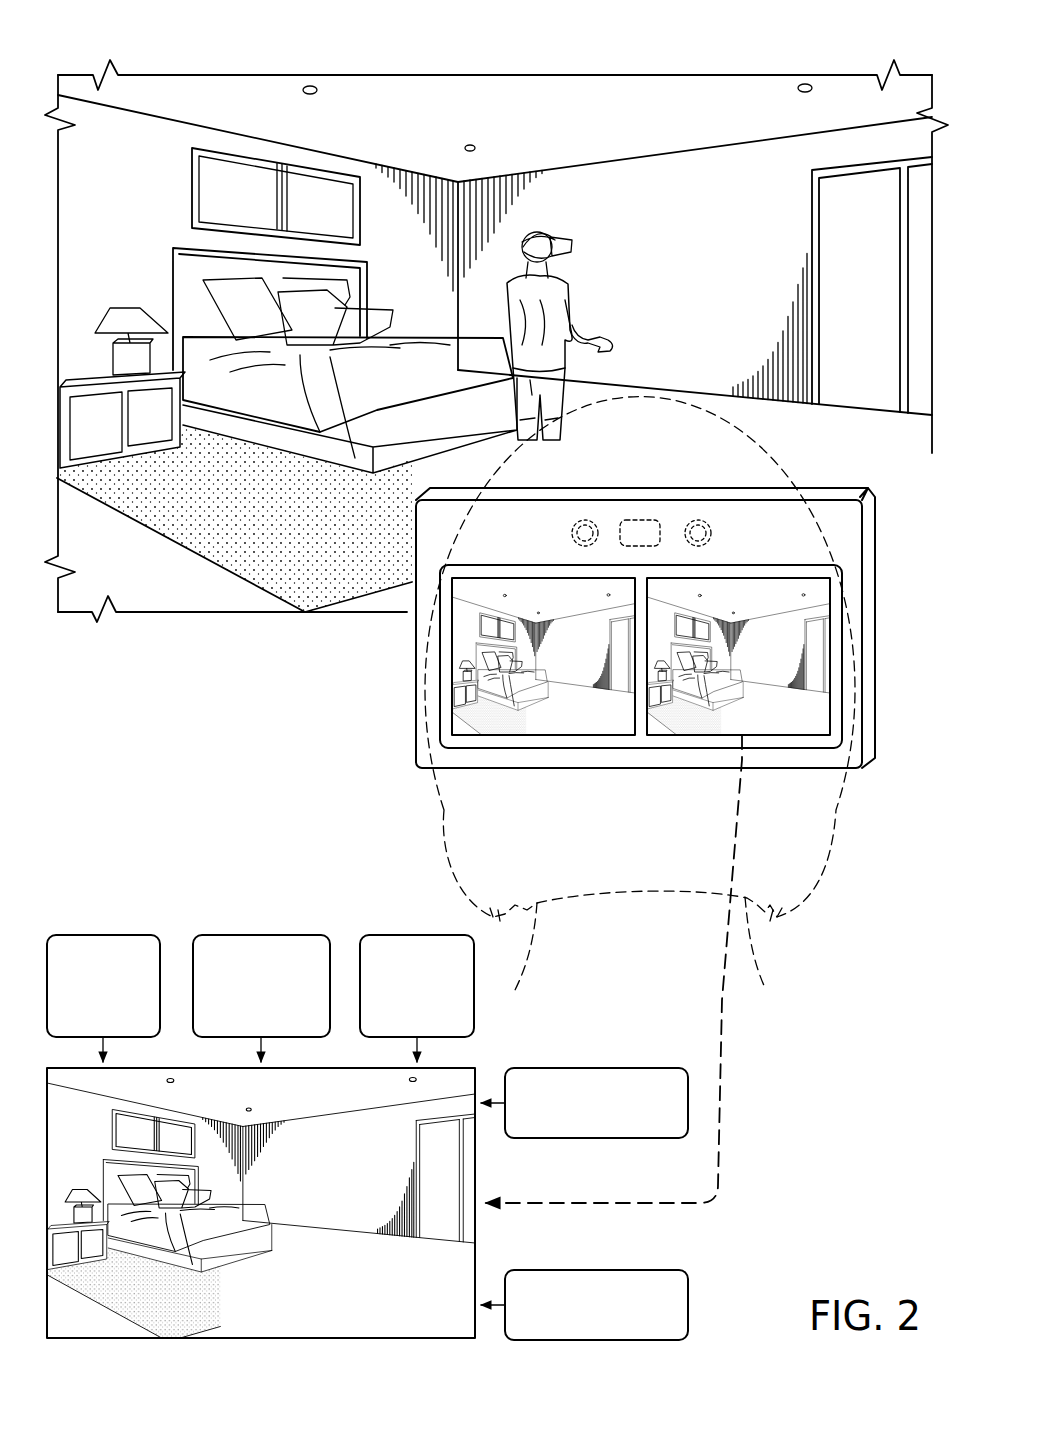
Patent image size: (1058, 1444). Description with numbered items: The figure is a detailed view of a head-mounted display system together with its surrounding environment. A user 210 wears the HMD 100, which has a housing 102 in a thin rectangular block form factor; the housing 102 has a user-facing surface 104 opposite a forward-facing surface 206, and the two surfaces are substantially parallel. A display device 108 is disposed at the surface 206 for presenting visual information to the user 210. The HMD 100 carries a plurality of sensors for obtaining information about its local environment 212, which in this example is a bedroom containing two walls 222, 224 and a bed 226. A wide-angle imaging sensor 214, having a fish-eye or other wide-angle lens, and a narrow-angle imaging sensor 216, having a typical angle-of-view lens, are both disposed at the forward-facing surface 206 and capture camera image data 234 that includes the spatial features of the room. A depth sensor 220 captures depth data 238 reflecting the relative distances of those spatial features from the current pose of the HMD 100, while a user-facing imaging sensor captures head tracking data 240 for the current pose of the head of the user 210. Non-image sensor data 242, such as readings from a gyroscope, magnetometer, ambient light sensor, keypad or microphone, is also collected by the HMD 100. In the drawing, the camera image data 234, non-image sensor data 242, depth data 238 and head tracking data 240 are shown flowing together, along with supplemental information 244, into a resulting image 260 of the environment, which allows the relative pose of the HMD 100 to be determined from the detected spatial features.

The HMD 100 is at (880, 532).
The housing 102 is at (872, 590).
The surface 104 is at (568, 760).
The display device 108 is at (786, 742).
The surface 206 is at (870, 645).
The user 210 is at (572, 305).
The local environment 212 is at (370, 71).
The wide-angle imaging sensor 214 is at (568, 535).
The narrow-angle imaging sensor 216 is at (714, 535).
The depth sensor 220 is at (643, 518).
The wall 222 is at (706, 172).
The wall 224 is at (155, 138).
The bed 226 is at (425, 332).
The camera image data 234 is at (93, 935).
The depth data 238 is at (407, 935).
The head tracking data 240 is at (597, 1068).
The non-image sensor data 242 is at (250, 935).
The supplemental information 244 is at (690, 1314).
The composite image 260 is at (486, 1229).